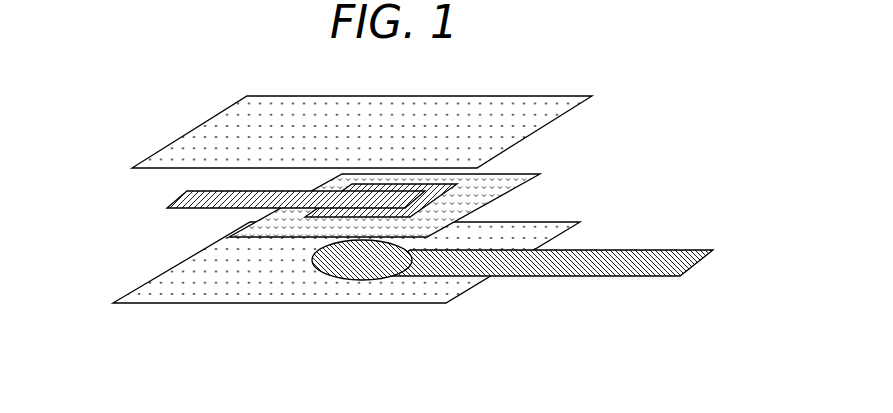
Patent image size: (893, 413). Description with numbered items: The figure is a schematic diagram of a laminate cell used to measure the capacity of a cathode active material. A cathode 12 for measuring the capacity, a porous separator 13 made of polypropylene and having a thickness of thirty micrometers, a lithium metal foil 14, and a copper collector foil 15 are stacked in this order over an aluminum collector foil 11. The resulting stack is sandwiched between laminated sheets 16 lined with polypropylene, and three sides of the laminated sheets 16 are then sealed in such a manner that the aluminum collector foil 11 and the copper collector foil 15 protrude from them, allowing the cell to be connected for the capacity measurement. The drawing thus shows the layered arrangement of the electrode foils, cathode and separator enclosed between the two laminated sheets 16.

The aluminum collector foil 11 is at (643, 255).
The cathode 12 is at (335, 277).
The porous separator 13 is at (490, 190).
The lithium metal foil 14 is at (283, 211).
The copper collector foil 15 is at (182, 195).
The laminated sheet 16 is at (535, 118).